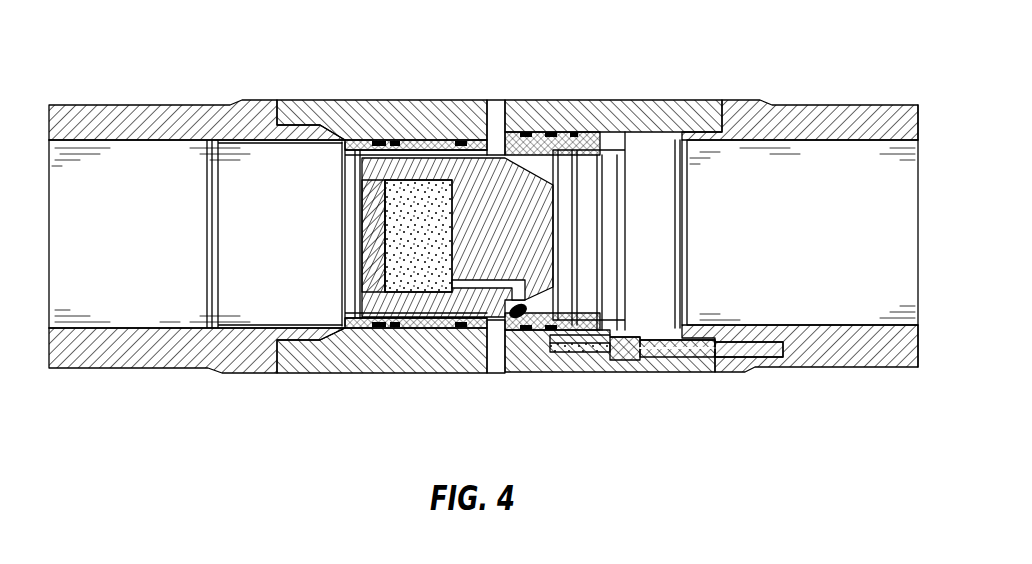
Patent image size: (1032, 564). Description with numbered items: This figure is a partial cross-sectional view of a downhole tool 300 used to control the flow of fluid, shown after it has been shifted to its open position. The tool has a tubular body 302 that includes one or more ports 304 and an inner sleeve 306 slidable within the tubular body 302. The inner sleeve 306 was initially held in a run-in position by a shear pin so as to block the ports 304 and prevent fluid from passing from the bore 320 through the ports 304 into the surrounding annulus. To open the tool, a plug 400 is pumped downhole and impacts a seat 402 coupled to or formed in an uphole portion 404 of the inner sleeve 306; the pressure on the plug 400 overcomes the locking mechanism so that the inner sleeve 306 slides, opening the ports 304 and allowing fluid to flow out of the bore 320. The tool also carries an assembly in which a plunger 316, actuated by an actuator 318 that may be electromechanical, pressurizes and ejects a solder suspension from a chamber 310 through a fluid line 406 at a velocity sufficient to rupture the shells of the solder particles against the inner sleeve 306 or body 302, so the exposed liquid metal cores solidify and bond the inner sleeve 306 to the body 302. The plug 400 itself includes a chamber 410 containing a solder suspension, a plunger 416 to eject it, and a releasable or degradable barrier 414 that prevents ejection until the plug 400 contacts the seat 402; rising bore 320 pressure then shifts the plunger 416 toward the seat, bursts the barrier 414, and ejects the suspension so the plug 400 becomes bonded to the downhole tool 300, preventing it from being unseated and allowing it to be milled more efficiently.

The downhole tool 300 is at (125, 47).
The tubular body 302 is at (249, 100).
The ports 304 is at (497, 100).
The inner sleeve 306 is at (599, 140).
The chamber 310 is at (665, 352).
The plunger 316 is at (698, 358).
The actuator 318 is at (765, 357).
The bore 320 is at (150, 246).
The plug 400 is at (377, 312).
The seat 402 is at (545, 133).
The uphole portion 404 is at (558, 347).
The fluid line 406 is at (577, 352).
The chamber 410 is at (445, 295).
The barrier 414 is at (520, 318).
The plunger 416 is at (360, 270).